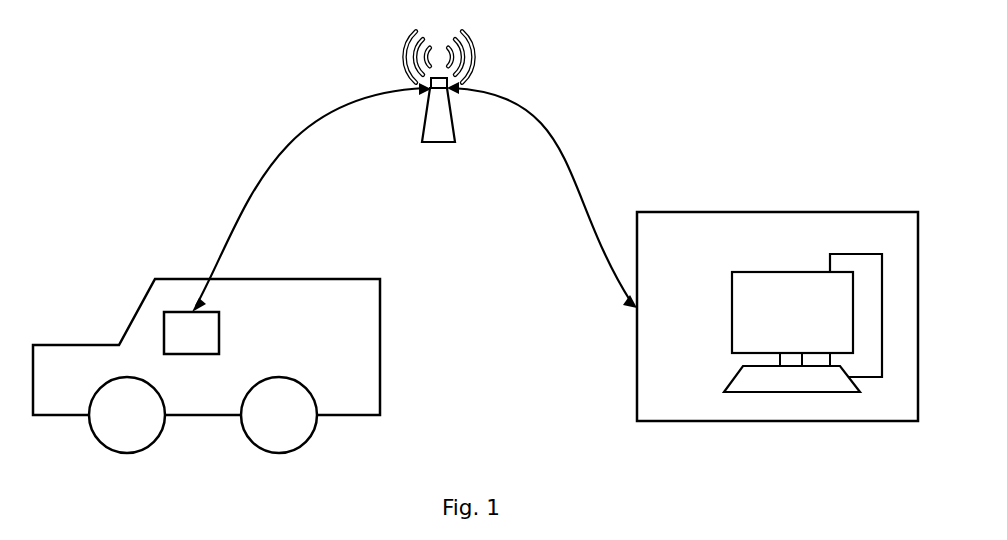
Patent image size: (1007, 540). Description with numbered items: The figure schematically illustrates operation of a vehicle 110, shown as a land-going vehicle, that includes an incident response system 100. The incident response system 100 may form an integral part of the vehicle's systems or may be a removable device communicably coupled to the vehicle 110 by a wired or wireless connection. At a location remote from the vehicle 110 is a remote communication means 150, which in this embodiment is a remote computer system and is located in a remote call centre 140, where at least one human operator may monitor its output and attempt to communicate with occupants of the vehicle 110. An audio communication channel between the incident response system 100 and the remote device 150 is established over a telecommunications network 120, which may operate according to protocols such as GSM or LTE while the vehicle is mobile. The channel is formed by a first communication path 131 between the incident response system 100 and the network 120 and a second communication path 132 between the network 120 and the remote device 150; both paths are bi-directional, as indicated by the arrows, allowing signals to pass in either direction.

The incident response system 100 is at (191, 333).
The vehicle 110 is at (206, 366).
The telecommunications network 120 is at (439, 73).
The first communication path 131 is at (311, 185).
The second communication path 132 is at (542, 195).
The remote call centre 140 is at (777, 316).
The remote communication means 150 is at (803, 323).